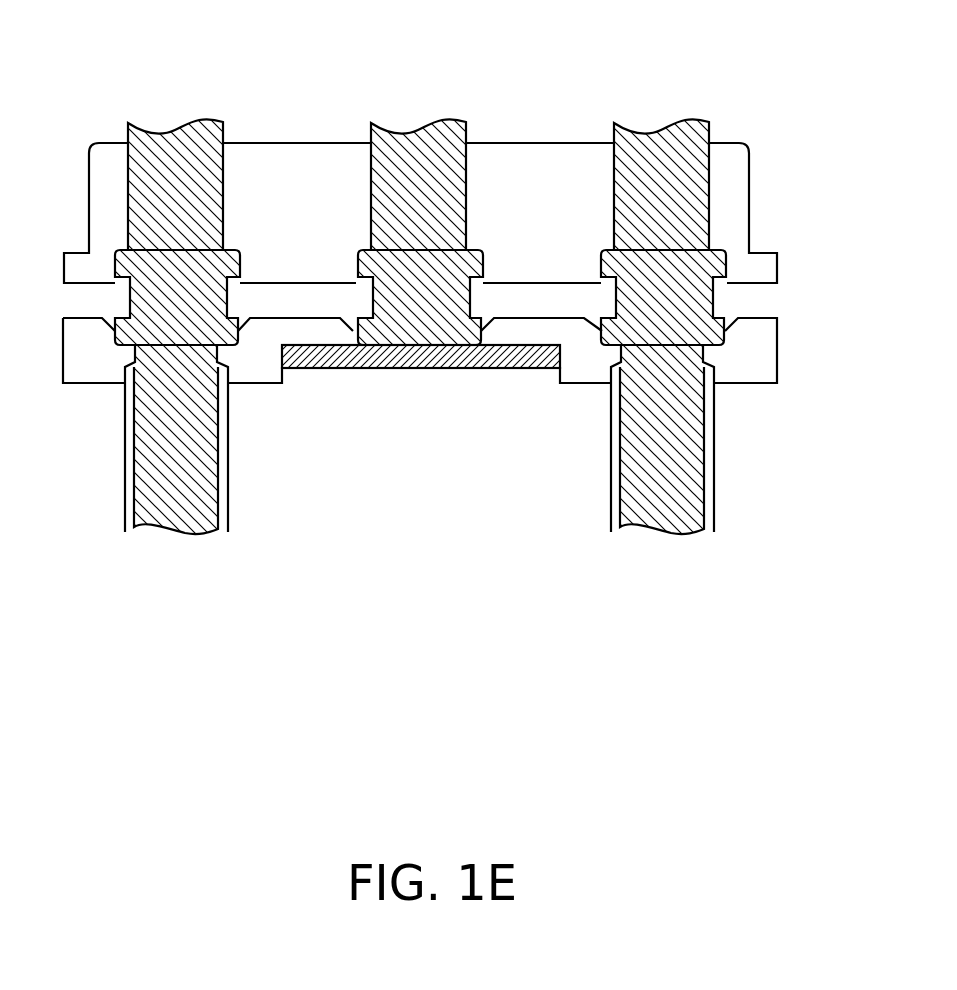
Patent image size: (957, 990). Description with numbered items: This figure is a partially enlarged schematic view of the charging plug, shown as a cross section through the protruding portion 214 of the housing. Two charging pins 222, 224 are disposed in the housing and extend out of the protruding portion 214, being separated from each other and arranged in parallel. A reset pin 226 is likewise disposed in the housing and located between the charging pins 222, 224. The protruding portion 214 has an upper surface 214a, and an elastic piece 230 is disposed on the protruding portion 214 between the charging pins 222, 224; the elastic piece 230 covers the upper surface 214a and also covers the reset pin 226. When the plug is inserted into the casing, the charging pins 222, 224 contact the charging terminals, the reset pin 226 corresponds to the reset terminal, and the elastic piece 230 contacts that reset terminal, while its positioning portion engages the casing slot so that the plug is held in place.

The protruding portion 214 is at (763, 357).
The upper surface 214a is at (741, 400).
The charging pin 222 is at (171, 138).
The charging pin 224 is at (653, 137).
The reset pin 226 is at (408, 137).
The elastic piece 230 is at (424, 368).